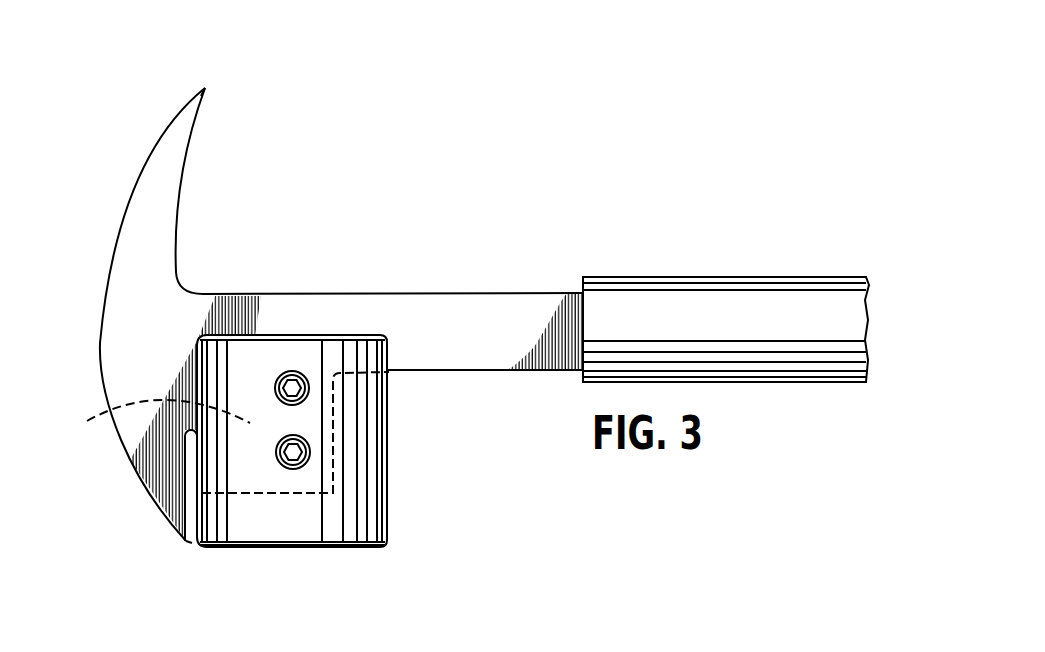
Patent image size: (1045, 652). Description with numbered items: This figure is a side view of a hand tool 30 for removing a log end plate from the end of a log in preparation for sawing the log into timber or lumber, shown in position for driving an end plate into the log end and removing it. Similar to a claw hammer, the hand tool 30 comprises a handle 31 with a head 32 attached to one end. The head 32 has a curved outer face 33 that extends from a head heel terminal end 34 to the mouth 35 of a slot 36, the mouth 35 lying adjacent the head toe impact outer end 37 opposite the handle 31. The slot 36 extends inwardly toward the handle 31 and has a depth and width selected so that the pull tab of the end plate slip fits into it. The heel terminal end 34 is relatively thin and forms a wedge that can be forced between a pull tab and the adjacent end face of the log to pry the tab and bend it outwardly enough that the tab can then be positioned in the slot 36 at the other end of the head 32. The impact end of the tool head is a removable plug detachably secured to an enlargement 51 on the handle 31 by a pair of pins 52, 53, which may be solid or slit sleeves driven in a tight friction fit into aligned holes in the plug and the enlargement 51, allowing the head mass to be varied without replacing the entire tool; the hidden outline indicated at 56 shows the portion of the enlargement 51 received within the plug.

The hand tool 30 is at (680, 148).
The handle 31 is at (585, 272).
The head 32 is at (169, 99).
The curved outer face 33 is at (117, 218).
The head heel terminal end 34 is at (205, 88).
The mouth 35 is at (190, 541).
The slot 36 is at (190, 473).
The head toe impact outer end 37 is at (283, 548).
The enlargement 51 is at (143, 424).
The pin 52 is at (283, 371).
The pin 53 is at (310, 441).
The hidden bore 56 is at (333, 458).